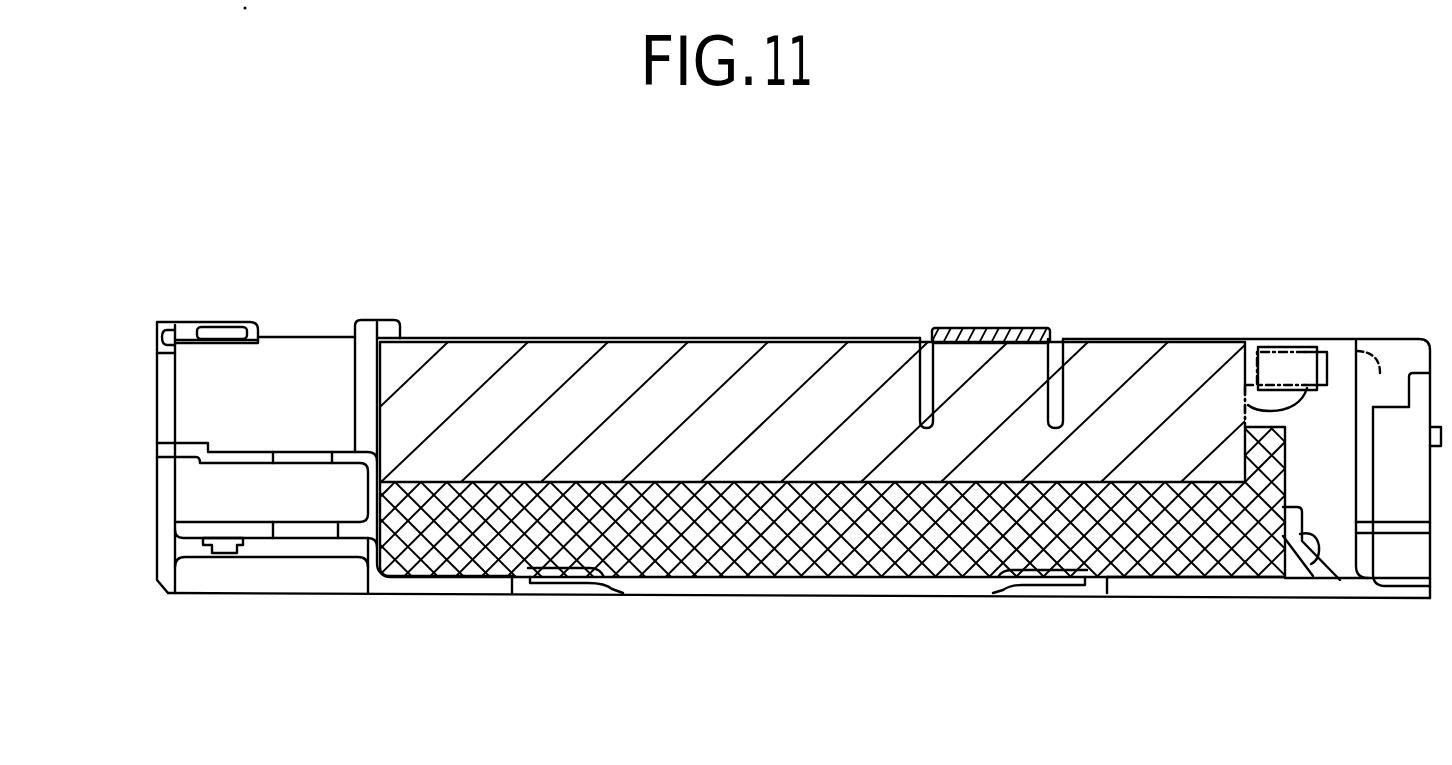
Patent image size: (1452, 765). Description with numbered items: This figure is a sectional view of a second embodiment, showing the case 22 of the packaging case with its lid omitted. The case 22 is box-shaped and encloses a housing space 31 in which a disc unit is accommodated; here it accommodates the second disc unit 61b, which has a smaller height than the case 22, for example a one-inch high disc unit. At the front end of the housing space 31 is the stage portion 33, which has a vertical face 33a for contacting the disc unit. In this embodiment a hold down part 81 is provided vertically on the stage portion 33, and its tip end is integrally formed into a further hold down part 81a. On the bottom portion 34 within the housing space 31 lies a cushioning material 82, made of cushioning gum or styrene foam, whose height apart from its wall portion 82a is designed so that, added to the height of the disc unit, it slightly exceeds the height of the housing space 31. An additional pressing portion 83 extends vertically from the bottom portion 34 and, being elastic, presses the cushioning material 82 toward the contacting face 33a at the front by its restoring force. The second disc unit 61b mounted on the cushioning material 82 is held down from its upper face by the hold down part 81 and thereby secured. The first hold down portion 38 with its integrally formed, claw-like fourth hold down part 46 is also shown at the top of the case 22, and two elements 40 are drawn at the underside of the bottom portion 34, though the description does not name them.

The case 22 is at (802, 598).
The housing space 31 is at (1307, 385).
The stage portion 33 is at (257, 452).
The vertical face 33a is at (390, 578).
The bottom portion 34 is at (708, 583).
The first hold down portion 38 is at (971, 322).
The support tab 40 is at (552, 593).
The fourth hold down part 46 is at (1039, 328).
The second disc unit 61b is at (718, 342).
The hold down part 81 is at (351, 378).
The further hold down part 81a is at (392, 320).
The cushioning material 82 is at (937, 572).
The wall portion 82a is at (1283, 451).
The additional pressing portion 83 is at (1302, 580).